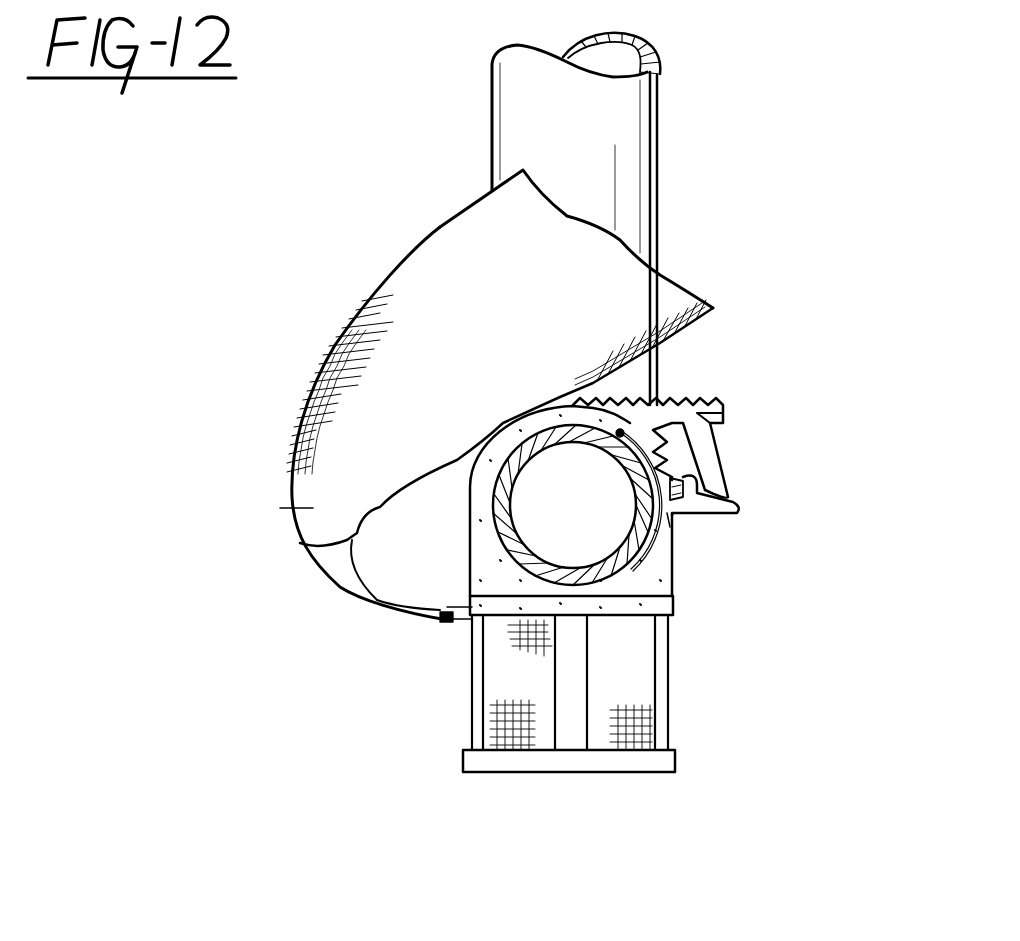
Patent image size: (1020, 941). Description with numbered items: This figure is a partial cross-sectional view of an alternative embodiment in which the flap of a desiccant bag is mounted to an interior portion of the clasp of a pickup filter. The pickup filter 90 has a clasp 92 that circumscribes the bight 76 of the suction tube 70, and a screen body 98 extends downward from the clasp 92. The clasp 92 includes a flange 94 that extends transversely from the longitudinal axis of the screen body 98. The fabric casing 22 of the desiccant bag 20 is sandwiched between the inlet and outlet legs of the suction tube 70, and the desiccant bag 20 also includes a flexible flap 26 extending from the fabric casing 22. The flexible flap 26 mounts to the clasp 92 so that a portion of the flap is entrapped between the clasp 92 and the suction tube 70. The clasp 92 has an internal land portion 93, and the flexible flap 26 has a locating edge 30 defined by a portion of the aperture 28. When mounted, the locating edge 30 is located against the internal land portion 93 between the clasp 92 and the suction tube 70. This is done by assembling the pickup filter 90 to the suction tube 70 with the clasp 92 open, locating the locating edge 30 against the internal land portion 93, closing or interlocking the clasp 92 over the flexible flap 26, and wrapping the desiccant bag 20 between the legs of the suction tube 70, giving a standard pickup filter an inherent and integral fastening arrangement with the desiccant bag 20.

The suction tube 70 is at (630, 110).
The fabric casing 22 is at (430, 280).
The desiccant bag 20 is at (313, 508).
The bight 76 is at (673, 553).
The flexible flap 26 is at (622, 430).
The locating edge 30 is at (632, 543).
The clasp 92 is at (578, 413).
The flange 94 is at (718, 442).
The internal land portion 93 is at (675, 503).
The screen body 98 is at (667, 690).
The pickup filter 90 is at (677, 732).
The aperture 28 is at (453, 618).